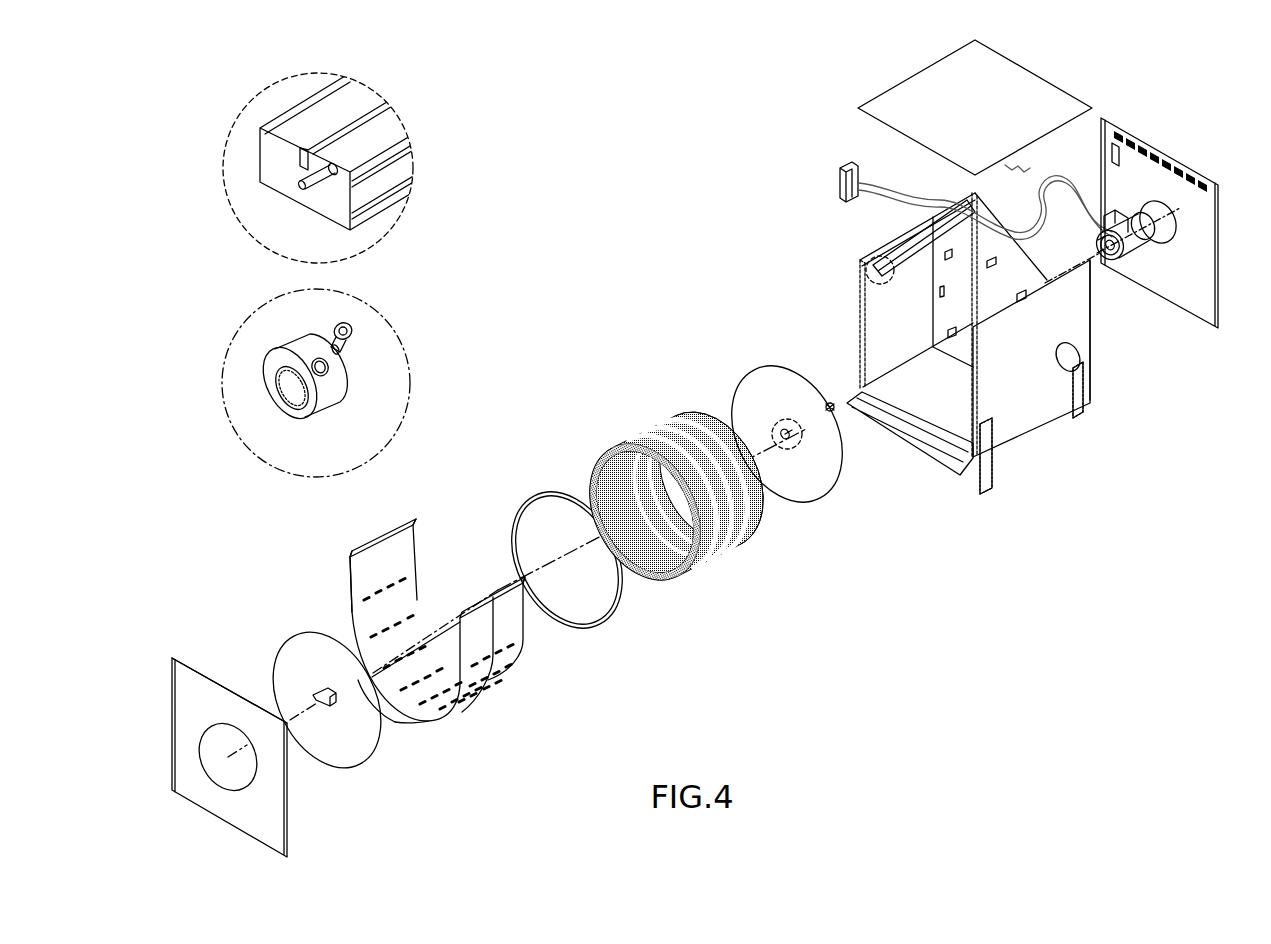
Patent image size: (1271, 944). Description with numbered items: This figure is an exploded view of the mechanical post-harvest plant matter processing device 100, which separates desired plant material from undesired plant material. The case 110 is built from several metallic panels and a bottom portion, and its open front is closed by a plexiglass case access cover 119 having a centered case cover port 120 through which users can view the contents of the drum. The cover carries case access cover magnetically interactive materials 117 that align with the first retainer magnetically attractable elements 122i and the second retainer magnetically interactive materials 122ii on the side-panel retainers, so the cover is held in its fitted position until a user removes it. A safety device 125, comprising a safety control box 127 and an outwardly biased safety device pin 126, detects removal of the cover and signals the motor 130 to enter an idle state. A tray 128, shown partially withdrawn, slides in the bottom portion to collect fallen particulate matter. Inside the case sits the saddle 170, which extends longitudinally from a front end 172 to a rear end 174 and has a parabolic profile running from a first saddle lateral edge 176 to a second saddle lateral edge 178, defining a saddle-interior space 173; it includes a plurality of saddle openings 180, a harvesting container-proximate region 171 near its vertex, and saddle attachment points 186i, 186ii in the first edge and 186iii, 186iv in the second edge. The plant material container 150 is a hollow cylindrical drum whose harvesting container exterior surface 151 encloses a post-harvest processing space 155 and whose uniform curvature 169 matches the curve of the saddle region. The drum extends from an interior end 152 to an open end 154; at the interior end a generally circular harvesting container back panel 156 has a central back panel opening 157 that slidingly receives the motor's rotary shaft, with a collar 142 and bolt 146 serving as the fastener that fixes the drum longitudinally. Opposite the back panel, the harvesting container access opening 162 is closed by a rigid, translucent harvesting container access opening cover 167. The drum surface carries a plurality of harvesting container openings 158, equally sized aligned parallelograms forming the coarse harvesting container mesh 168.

The mechanical post-harvest plant matter processing device 100 is at (563, 241).
The case 110 is at (898, 93).
The case access cover magnetically interactive materials 117 is at (170, 660).
The case access cover 119 is at (290, 815).
The case cover port 120 is at (218, 790).
The first retainer magnetically attractable elements 122i is at (861, 311).
The second retainer magnetically interactive materials 122ii is at (970, 374).
The safety device 125 is at (285, 123).
The safety device pin 126 is at (314, 178).
The safety control box 127 is at (267, 158).
The tray 128 is at (918, 447).
The motor 130 is at (1135, 257).
The collar 142 is at (335, 400).
The bolt 146 is at (352, 330).
The plant material container 150 is at (651, 426).
The harvesting container exterior surface 151 is at (745, 527).
The interior end 152 is at (742, 406).
The open end 154 is at (592, 474).
The post-harvest processing space 155 is at (662, 558).
The harvesting container back panel 156 is at (770, 368).
The back panel opening 157 is at (799, 450).
The harvesting container openings 158 is at (658, 574).
The harvesting container access opening 162 is at (604, 454).
The harvesting container access opening cover 167 is at (290, 650).
The coarse harvesting container mesh 168 is at (642, 542).
The curvature 169 is at (712, 570).
The saddle 170 is at (505, 632).
The harvesting container-proximate region 171 is at (400, 700).
The front end 172 is at (414, 724).
The saddle-interior space 173 is at (366, 563).
The rear end 174 is at (432, 627).
The first saddle lateral edge 176 is at (377, 533).
The second saddle lateral edge 178 is at (526, 600).
The saddle openings 180 is at (380, 630).
The saddle attachment point 186i is at (349, 552).
The saddle attachment point 186ii is at (414, 521).
The saddle attachment point 186iii is at (490, 598).
The saddle attachment point 186iv is at (507, 583).